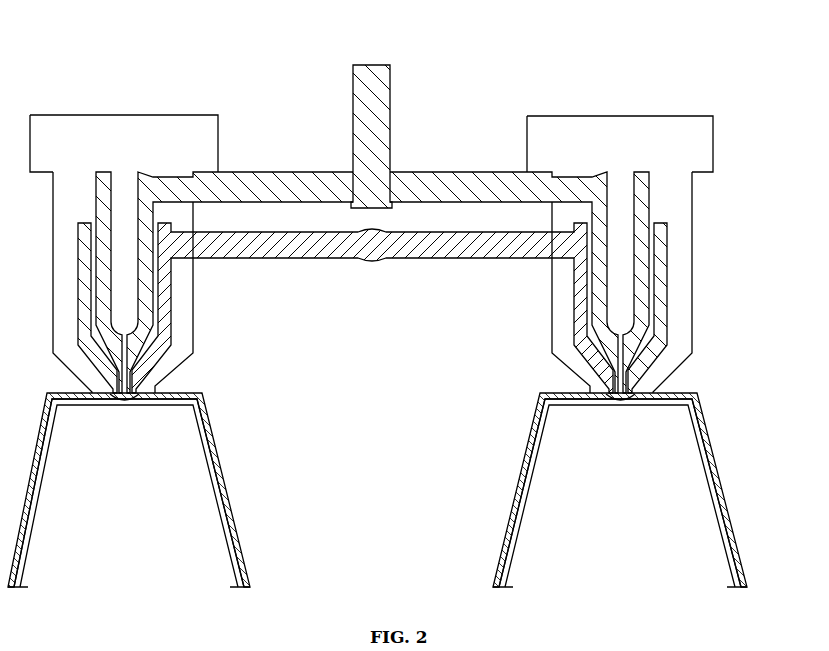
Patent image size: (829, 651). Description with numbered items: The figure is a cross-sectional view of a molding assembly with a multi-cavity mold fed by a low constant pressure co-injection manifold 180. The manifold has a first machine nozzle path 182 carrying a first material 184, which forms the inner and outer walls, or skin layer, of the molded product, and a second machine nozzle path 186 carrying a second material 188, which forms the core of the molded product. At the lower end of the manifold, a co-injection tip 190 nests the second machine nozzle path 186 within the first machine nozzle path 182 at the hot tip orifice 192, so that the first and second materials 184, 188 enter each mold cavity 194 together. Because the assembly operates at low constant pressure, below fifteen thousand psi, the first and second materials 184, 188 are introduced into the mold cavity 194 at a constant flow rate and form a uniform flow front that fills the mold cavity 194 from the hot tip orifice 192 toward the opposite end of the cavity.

The co-injection manifold 180 is at (495, 73).
The first machine nozzle path 182 is at (447, 259).
The first material 184 is at (577, 307).
The second machine nozzle path 186 is at (466, 188).
The second material 188 is at (375, 96).
The co-injection tip 190 is at (560, 348).
The hot tip orifice 192 is at (648, 390).
The mold cavity 194 is at (223, 477).